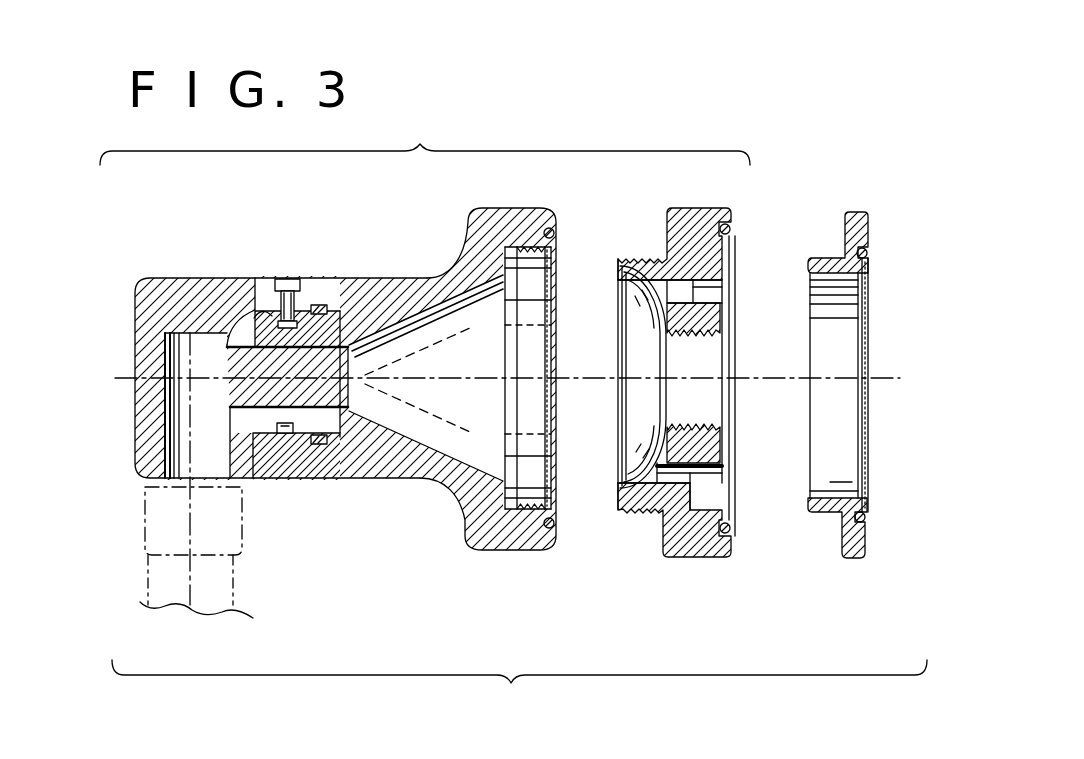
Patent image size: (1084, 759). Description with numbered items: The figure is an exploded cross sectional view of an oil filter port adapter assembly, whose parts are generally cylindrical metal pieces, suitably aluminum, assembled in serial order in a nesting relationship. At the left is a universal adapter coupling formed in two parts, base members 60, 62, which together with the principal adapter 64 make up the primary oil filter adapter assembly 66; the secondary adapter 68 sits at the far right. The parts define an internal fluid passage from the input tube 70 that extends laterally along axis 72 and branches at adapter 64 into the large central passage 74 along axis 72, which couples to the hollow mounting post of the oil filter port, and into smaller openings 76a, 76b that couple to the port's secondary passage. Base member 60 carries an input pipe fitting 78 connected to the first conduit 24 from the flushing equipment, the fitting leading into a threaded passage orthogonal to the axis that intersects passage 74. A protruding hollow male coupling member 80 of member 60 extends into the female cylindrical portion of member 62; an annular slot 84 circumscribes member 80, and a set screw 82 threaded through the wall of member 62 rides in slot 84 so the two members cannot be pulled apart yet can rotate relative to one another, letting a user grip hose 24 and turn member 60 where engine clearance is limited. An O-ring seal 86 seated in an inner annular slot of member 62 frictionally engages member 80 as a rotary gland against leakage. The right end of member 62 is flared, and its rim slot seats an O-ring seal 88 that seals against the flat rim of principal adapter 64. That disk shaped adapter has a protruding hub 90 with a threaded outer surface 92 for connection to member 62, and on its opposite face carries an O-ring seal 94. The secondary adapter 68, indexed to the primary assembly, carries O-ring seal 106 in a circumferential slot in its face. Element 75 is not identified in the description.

The first conduit 24 is at (150, 563).
The base member 60 is at (244, 276).
The base member 62 is at (437, 276).
The principal adapter 64 is at (687, 558).
The primary oil filter adapter assembly 66 is at (425, 141).
The secondary adapter 68 is at (866, 543).
The input tube 70 is at (178, 456).
The axis 72 is at (468, 378).
The central passage 74 is at (426, 378).
The dome cup 75 is at (676, 362).
The opening 76a is at (683, 293).
The opening 76b is at (683, 479).
The input pipe fitting 78 is at (230, 452).
The male coupling member 80 is at (250, 322).
The set screw 82 is at (282, 276).
The annular slot 84 is at (289, 437).
The O-ring seal 86 is at (320, 305).
The O-ring seal 88 is at (556, 232).
The cylindrical portion 90 is at (617, 497).
The threaded outer surface 92 is at (619, 512).
The O-ring seal 94 is at (730, 534).
The O-ring seal 106 is at (870, 252).